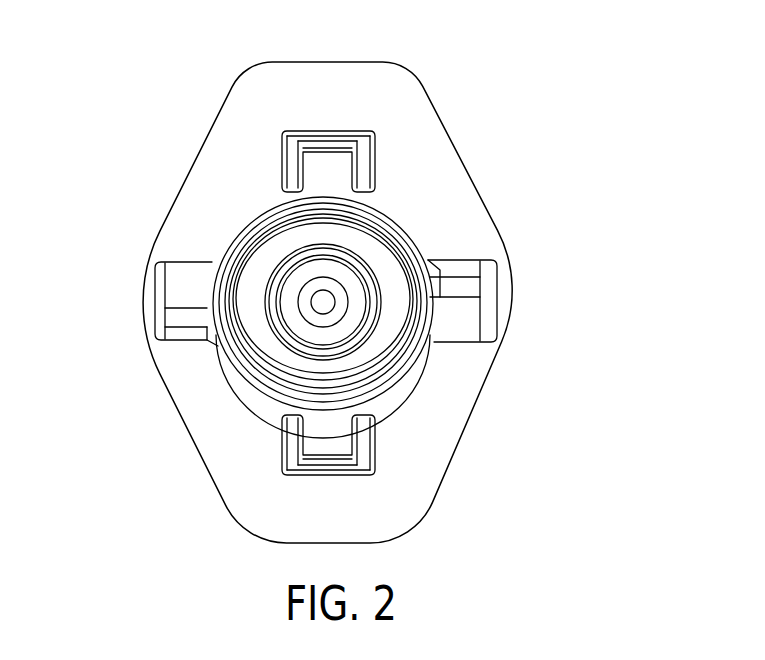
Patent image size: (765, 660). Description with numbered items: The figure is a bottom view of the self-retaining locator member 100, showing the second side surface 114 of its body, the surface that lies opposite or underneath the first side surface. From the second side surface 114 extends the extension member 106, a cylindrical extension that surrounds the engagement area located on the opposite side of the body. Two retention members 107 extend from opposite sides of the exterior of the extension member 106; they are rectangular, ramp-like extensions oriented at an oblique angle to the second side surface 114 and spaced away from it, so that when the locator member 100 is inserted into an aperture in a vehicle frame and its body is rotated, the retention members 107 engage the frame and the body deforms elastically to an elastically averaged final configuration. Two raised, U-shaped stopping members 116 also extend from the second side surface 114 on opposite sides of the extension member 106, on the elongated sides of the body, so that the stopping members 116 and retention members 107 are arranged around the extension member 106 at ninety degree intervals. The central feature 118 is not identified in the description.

The self-retaining locator member 100 is at (120, 113).
The extension member 106 is at (377, 223).
The retention member 107 is at (178, 298).
The second side surface 114 is at (425, 418).
The stopping member 116 is at (356, 145).
The central port 118 is at (325, 302).